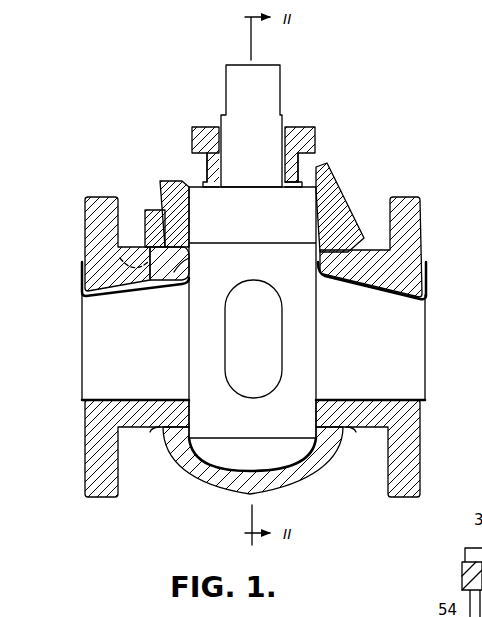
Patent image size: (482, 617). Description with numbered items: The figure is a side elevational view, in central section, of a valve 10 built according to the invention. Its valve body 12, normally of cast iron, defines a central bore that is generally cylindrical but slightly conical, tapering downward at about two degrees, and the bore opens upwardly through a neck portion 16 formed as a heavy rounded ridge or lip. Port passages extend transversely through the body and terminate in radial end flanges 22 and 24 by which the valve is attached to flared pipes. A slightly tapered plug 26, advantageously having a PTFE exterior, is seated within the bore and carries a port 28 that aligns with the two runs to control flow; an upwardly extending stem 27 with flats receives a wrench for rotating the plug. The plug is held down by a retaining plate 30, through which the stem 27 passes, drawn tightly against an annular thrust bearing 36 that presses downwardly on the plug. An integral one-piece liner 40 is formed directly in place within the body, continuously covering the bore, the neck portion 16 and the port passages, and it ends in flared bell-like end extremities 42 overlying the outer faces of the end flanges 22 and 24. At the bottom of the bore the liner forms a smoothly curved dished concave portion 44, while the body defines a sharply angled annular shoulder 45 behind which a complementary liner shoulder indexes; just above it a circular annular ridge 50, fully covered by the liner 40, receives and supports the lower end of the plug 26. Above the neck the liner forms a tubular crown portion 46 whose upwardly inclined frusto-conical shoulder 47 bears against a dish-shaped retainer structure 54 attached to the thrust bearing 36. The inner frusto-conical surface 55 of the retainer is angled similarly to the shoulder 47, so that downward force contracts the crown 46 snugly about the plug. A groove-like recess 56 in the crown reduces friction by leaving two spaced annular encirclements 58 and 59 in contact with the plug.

The valve 10 is at (147, 178).
The valve body 12 is at (418, 226).
The neck portion 16 is at (161, 273).
The radial end flange 22 is at (413, 233).
The radial end flange 24 is at (93, 225).
The plug 26 is at (272, 225).
The stem 27 is at (258, 156).
The port 28 is at (262, 342).
The retaining plate 30 is at (306, 136).
The annular thrust bearing 36 is at (298, 164).
The liner 40 is at (345, 302).
The bell-like end extremities 42 is at (83, 428).
The dished concave portion 44 is at (192, 483).
The annular shoulder 45 is at (344, 440).
The crown portion 46 is at (166, 256).
The frusto-conical shoulder 47 is at (162, 233).
The annular ridge 50 is at (167, 423).
The retainer structure 54 is at (358, 213).
The inner frusto-conical surface 55 is at (346, 213).
The groove-like recess 56 is at (322, 229).
The annular encirclement 58 is at (189, 213).
The annular encirclement 59 is at (193, 263).